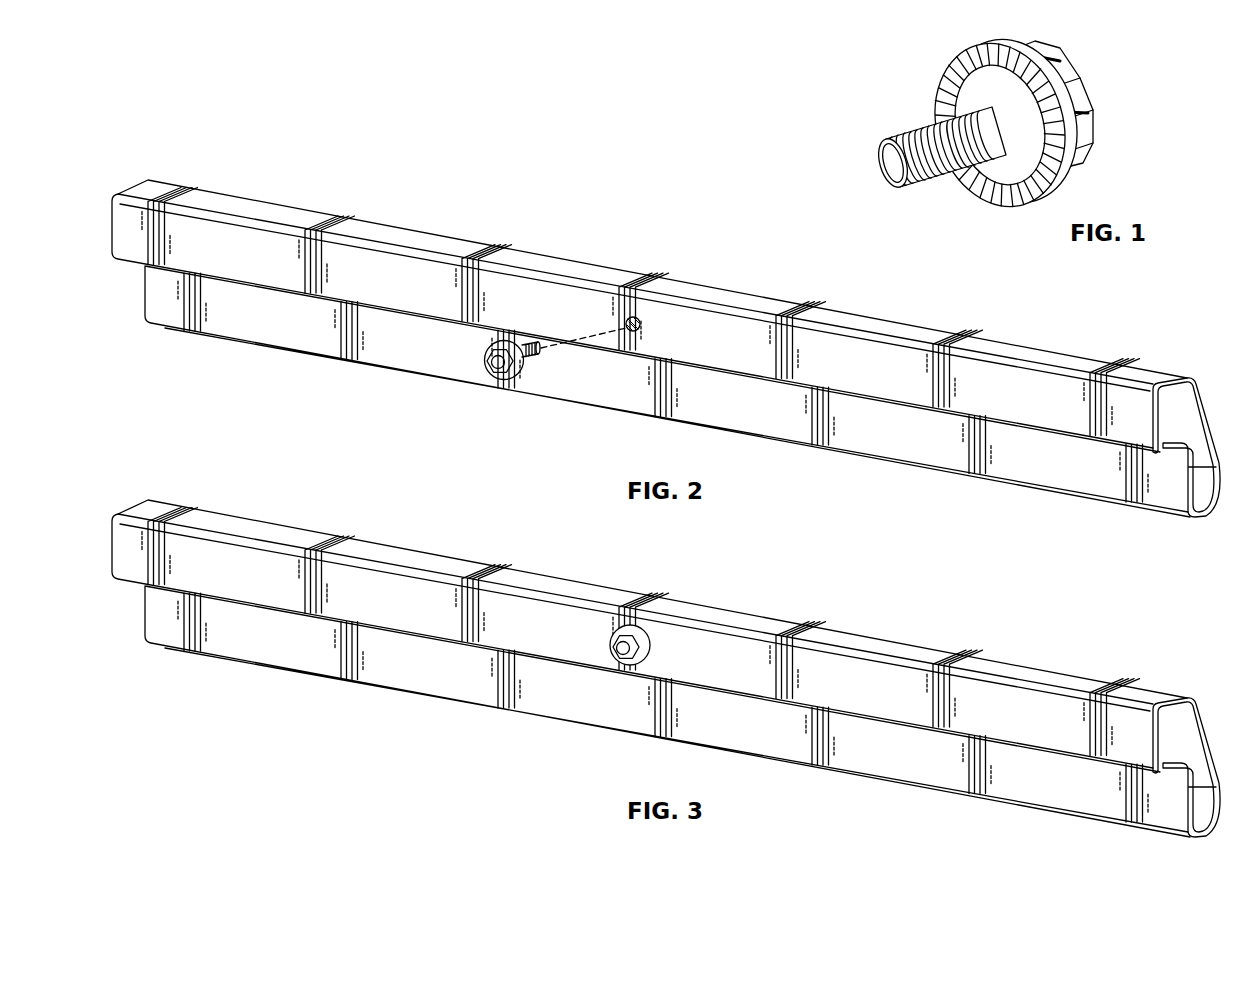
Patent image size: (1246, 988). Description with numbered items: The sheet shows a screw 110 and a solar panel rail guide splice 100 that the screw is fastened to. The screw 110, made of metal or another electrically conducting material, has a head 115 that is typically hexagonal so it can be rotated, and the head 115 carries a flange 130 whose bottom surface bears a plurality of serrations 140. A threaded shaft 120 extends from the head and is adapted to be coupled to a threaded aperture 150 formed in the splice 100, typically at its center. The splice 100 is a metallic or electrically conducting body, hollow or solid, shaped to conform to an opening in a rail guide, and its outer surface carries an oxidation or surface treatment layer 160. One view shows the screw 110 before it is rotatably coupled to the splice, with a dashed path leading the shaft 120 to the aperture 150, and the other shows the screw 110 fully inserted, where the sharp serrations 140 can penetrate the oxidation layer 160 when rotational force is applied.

In FIG. 2, the splice 100 is at (242, 202).
In FIG. 3, the splice 100 is at (242, 522).
In FIG. 1, the screw 110 is at (1001, 132).
In FIG. 2, the screw 110 is at (482, 385).
In FIG. 3, the screw 110 is at (628, 663).
In FIG. 1, the head 115 is at (1094, 111).
In FIG. 3, the head 115 is at (619, 652).
In FIG. 1, the threaded shaft 120 is at (903, 135).
In FIG. 1, the flange 130 is at (989, 132).
In FIG. 3, the flange 130 is at (651, 648).
In FIG. 1, the serrations 140 is at (962, 176).
In FIG. 2, the threaded aperture 150 is at (641, 325).
In FIG. 2, the oxidation or surface treatment layer 160 is at (1047, 403).
In FIG. 3, the oxidation or surface treatment layer 160 is at (1047, 723).